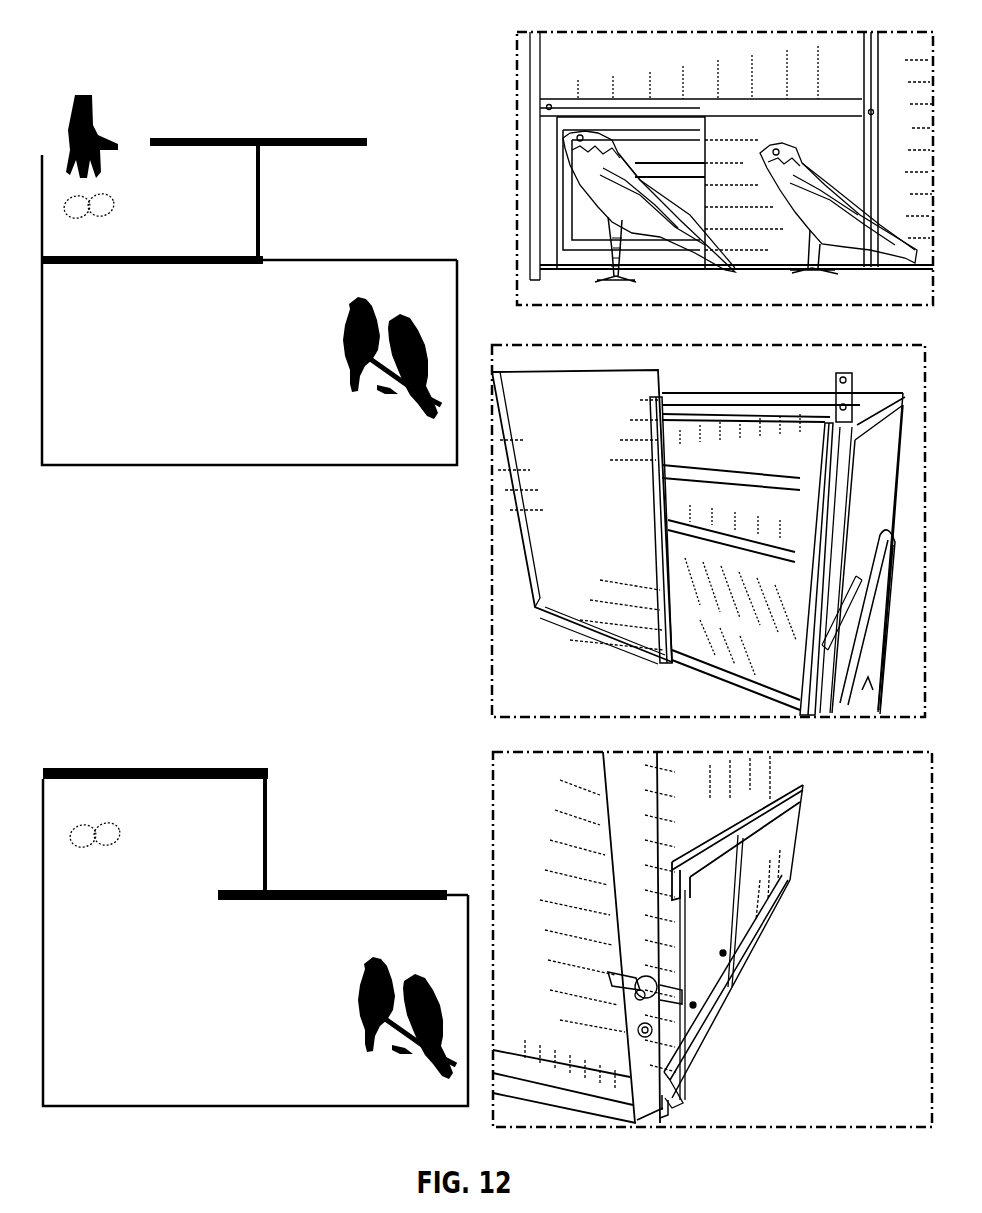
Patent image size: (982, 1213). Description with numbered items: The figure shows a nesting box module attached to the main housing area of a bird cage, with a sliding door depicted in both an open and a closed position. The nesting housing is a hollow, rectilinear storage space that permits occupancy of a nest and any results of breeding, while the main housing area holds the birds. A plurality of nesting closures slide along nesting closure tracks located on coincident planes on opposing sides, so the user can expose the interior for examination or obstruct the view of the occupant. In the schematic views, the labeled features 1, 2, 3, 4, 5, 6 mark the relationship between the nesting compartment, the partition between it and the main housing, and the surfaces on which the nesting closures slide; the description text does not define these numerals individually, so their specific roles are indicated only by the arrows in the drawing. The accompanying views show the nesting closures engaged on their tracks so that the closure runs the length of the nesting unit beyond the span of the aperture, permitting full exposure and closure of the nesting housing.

The partition wall 1 is at (279, 203).
The nest box roof 2 is at (317, 124).
The nest box floor 3 is at (157, 284).
The partition wall 4 is at (293, 825).
The nest box roof 5 is at (278, 744).
The nest box floor 6 is at (252, 927).